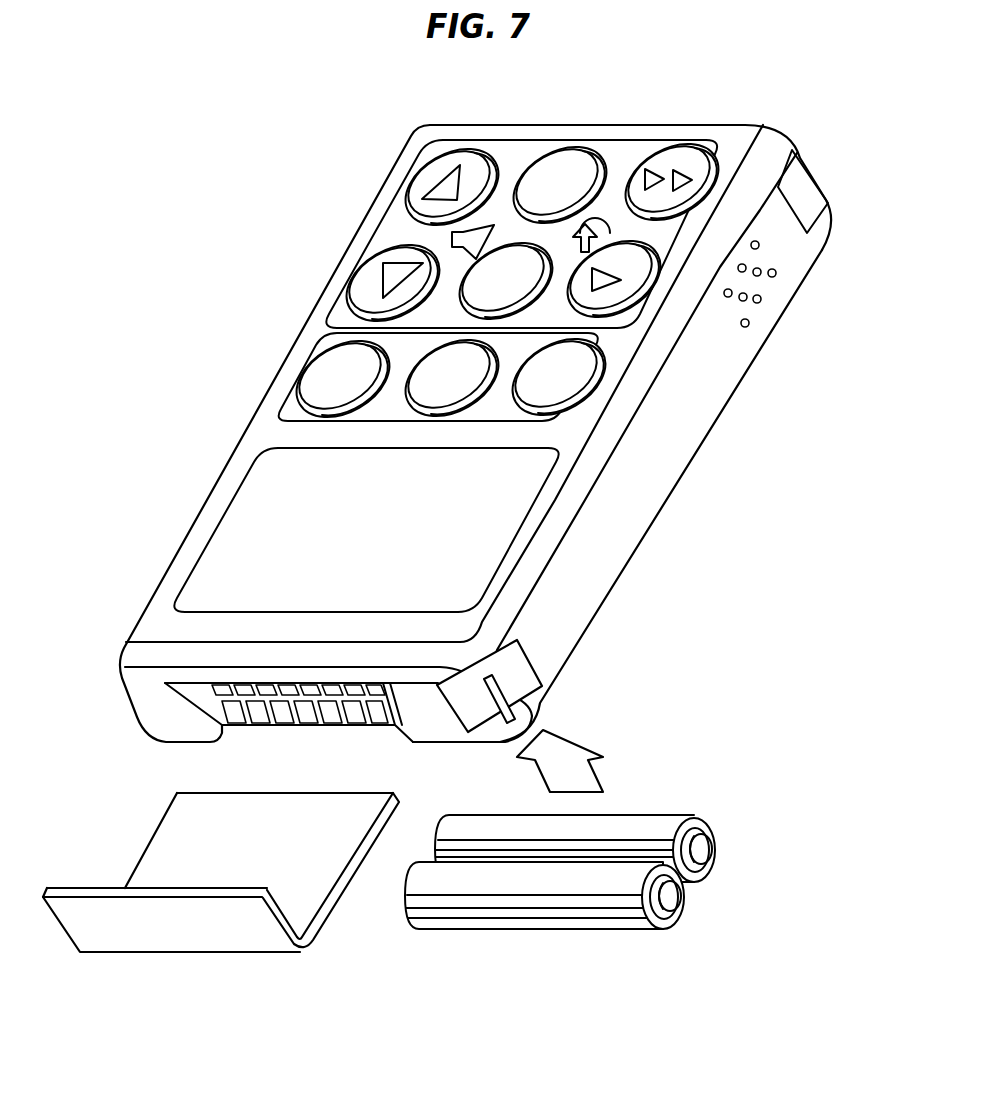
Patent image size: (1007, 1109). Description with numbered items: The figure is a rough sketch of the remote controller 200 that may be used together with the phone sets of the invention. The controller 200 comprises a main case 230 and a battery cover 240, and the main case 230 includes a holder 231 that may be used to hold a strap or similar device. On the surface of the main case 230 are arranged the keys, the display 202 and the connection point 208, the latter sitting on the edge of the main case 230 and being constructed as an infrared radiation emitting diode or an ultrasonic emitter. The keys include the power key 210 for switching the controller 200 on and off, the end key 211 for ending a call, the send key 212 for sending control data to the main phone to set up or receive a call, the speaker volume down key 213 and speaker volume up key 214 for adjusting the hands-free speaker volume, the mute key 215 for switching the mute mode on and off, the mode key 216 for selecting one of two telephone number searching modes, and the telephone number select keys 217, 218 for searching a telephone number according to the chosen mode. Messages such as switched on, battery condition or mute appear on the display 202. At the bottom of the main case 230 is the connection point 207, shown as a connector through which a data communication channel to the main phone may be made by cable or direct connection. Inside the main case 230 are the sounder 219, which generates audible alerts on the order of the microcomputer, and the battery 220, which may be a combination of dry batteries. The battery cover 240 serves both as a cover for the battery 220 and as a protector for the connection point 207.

The controller 200 is at (488, 99).
The display 202 is at (227, 503).
The connection point 207 is at (340, 724).
The connection point 208 is at (817, 178).
The power key 210 is at (312, 372).
The end key 211 is at (413, 403).
The send key 212 is at (600, 372).
The speaker volume down key 213 is at (365, 272).
The speaker volume up key 214 is at (417, 187).
The mute key 215 is at (466, 298).
The mode key 216 is at (566, 160).
The telephone number select key 217 is at (672, 158).
The telephone number select key 218 is at (640, 273).
The sounder 219 is at (763, 282).
The battery 220 is at (712, 855).
The main case 230 is at (608, 593).
The holder 231 is at (512, 688).
The battery cover 240 is at (323, 927).